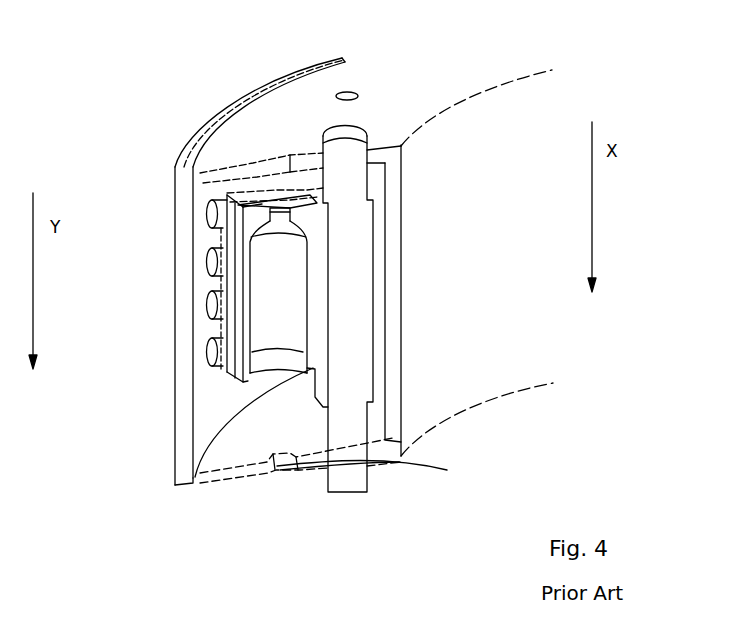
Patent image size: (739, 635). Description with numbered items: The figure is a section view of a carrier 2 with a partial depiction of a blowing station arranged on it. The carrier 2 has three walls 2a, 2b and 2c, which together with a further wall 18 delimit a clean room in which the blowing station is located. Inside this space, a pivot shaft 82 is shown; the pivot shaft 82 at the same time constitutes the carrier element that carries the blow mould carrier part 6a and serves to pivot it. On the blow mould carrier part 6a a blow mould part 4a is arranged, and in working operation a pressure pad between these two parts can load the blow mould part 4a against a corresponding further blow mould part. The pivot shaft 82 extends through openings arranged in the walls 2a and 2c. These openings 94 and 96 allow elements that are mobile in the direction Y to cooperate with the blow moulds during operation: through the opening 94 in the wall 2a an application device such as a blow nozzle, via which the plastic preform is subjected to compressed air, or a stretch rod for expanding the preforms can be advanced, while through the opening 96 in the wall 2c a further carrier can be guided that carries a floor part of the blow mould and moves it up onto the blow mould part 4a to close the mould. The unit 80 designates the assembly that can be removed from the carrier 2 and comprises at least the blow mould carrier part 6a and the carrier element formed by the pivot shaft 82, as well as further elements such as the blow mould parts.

The carrier 2 is at (506, 143).
The wall of the carrier 2a is at (312, 127).
The wall of the carrier 2b is at (395, 290).
The wall of the carrier 2c is at (255, 472).
The blow mould part 4a is at (255, 275).
The blow mould carrier part 6a is at (243, 195).
The wall 18 is at (185, 370).
The unit 80 is at (375, 260).
The pivot shaft 82 is at (358, 175).
The opening 94 is at (278, 158).
The opening 96 is at (375, 472).